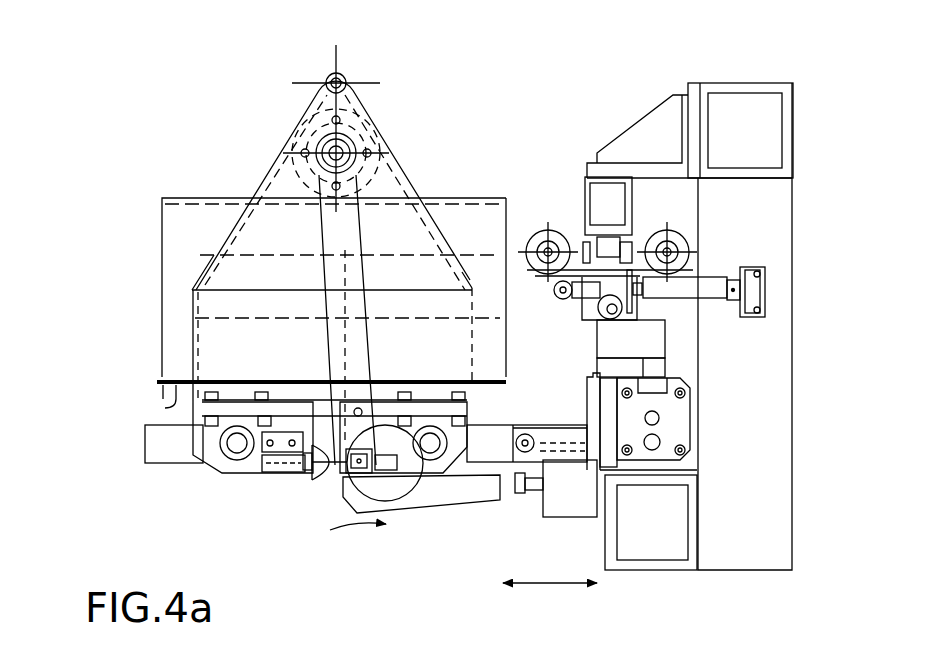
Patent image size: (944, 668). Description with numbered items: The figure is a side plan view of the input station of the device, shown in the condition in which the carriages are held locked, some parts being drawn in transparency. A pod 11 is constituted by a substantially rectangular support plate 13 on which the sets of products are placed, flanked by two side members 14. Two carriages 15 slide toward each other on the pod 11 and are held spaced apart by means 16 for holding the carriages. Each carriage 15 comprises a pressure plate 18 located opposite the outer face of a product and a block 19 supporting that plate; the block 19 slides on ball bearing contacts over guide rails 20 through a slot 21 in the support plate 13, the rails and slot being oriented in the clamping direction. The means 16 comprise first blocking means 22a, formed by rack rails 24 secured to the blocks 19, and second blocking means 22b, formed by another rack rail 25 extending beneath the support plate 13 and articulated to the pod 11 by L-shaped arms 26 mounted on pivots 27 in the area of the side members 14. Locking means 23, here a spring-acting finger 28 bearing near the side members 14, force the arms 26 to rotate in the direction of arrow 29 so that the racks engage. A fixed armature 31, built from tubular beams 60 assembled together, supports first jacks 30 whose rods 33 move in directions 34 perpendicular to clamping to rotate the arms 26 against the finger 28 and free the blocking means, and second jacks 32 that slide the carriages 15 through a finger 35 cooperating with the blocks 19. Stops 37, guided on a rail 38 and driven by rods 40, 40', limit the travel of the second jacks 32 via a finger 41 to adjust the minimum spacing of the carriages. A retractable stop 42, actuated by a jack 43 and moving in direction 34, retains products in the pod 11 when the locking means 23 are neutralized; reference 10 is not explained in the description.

The feeding device frame 10 is at (700, 429).
The pod 11 is at (459, 118).
The support plate 13 is at (165, 407).
The side member 14 is at (281, 181).
The carriage 15 is at (150, 292).
The means for holding the carriages 16 is at (345, 506).
The pressure plate 18 is at (487, 225).
The block 19 is at (213, 472).
The guide rail 20 is at (237, 458).
The slot 21 is at (324, 435).
The first blocking means 22a is at (403, 509).
The second blocking means 22b is at (418, 404).
The locking means 23 is at (333, 455).
The rack rail 24 is at (398, 470).
The rack rail 25 is at (382, 456).
The arm 26 is at (345, 240).
The pivot 27 is at (350, 148).
The finger 28 is at (326, 470).
The arrow 29 is at (350, 536).
The first jack 30 is at (527, 500).
The fixed armature 31 is at (748, 108).
The second jack 32 is at (585, 395).
The rod 33 is at (560, 518).
The direction 34 is at (545, 587).
The finger 35 is at (490, 452).
The stop 37 is at (600, 321).
The rail 38 is at (607, 243).
The rod 40 is at (605, 231).
The rod 40' is at (693, 236).
The finger 41 is at (645, 337).
The retractable stop 42 is at (561, 303).
The jack 43 is at (718, 277).
The tubular beam 60 is at (777, 257).